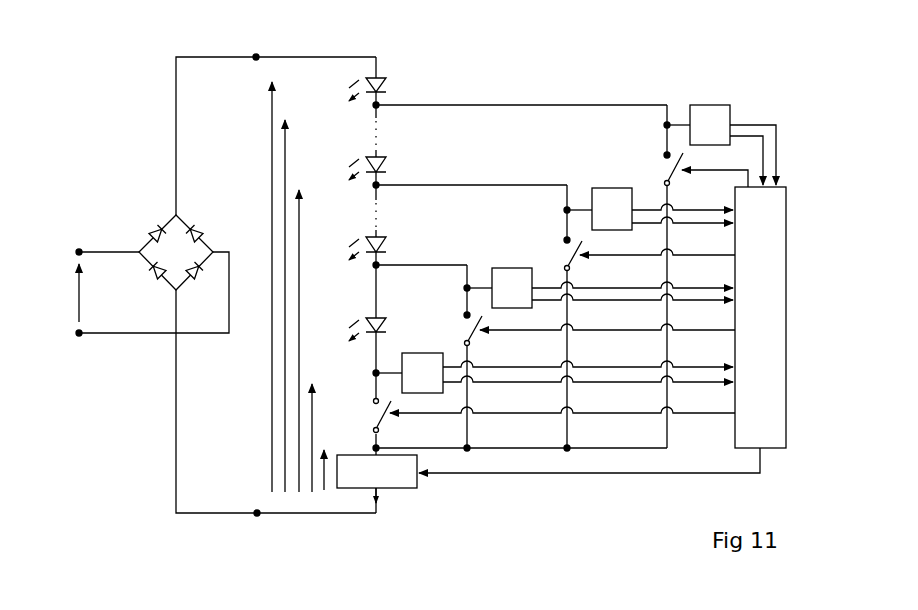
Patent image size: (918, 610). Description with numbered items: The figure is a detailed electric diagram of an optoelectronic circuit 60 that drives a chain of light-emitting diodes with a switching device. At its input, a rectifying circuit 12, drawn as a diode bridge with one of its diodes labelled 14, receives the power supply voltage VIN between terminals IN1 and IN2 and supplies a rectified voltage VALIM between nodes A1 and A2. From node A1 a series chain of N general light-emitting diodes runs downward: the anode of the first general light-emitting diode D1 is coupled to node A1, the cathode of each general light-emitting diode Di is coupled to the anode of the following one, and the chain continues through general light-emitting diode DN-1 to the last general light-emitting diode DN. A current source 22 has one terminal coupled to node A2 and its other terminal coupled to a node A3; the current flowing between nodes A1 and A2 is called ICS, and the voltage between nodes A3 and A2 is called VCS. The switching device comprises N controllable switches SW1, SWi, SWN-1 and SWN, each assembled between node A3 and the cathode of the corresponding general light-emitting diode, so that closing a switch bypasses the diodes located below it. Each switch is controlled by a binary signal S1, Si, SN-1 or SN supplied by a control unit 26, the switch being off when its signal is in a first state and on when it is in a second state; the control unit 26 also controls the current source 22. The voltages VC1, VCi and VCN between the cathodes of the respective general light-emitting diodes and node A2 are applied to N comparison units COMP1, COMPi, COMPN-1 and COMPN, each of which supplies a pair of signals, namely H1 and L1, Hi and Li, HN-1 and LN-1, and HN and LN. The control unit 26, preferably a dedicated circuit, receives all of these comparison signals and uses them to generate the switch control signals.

The optoelectronic circuit 60 is at (110, 50).
The rectifying circuit 12 is at (176, 231).
The diode of rectifier bridge 14 is at (154, 231).
The current source 22 is at (405, 488).
The control unit 26 is at (785, 334).
The input terminal IN1 is at (79, 252).
The input terminal IN2 is at (79, 335).
The power supply voltage VIN is at (79, 295).
The node A1 is at (256, 56).
The node A2 is at (257, 514).
The node A3 is at (376, 448).
The rectified voltage VALIM is at (272, 136).
The cathode voltage VC1 is at (285, 160).
The cathode voltage VCi is at (299, 246).
The cathode voltage VCN is at (312, 403).
The current source voltage VCS is at (324, 478).
The current ICS is at (378, 498).
The general light-emitting diode D1 is at (384, 86).
The general light-emitting diode Di is at (384, 166).
The general light-emitting diode DN-1 is at (382, 246).
The general light-emitting diode DN is at (368, 324).
The controllable switch SW1 is at (671, 162).
The controllable switch SWi is at (571, 252).
The controllable switch SWN-1 is at (466, 328).
The controllable switch SWN is at (384, 414).
The comparison unit COMP1 is at (705, 105).
The comparison unit COMPi is at (610, 188).
The comparison unit COMPN-1 is at (517, 268).
The comparison unit COMPN is at (421, 353).
The control signal S1 is at (704, 170).
The control signal Si is at (618, 255).
The control signal SN-1 is at (508, 330).
The control signal SN is at (406, 414).
The comparison signal H1 is at (774, 136).
The comparison signal L1 is at (768, 136).
The comparison signal Hi is at (689, 210).
The comparison signal Li is at (689, 223).
The comparison signal HN-1 is at (700, 284).
The comparison signal LN-1 is at (702, 300).
The comparison signal HN is at (698, 367).
The comparison signal LN is at (706, 382).